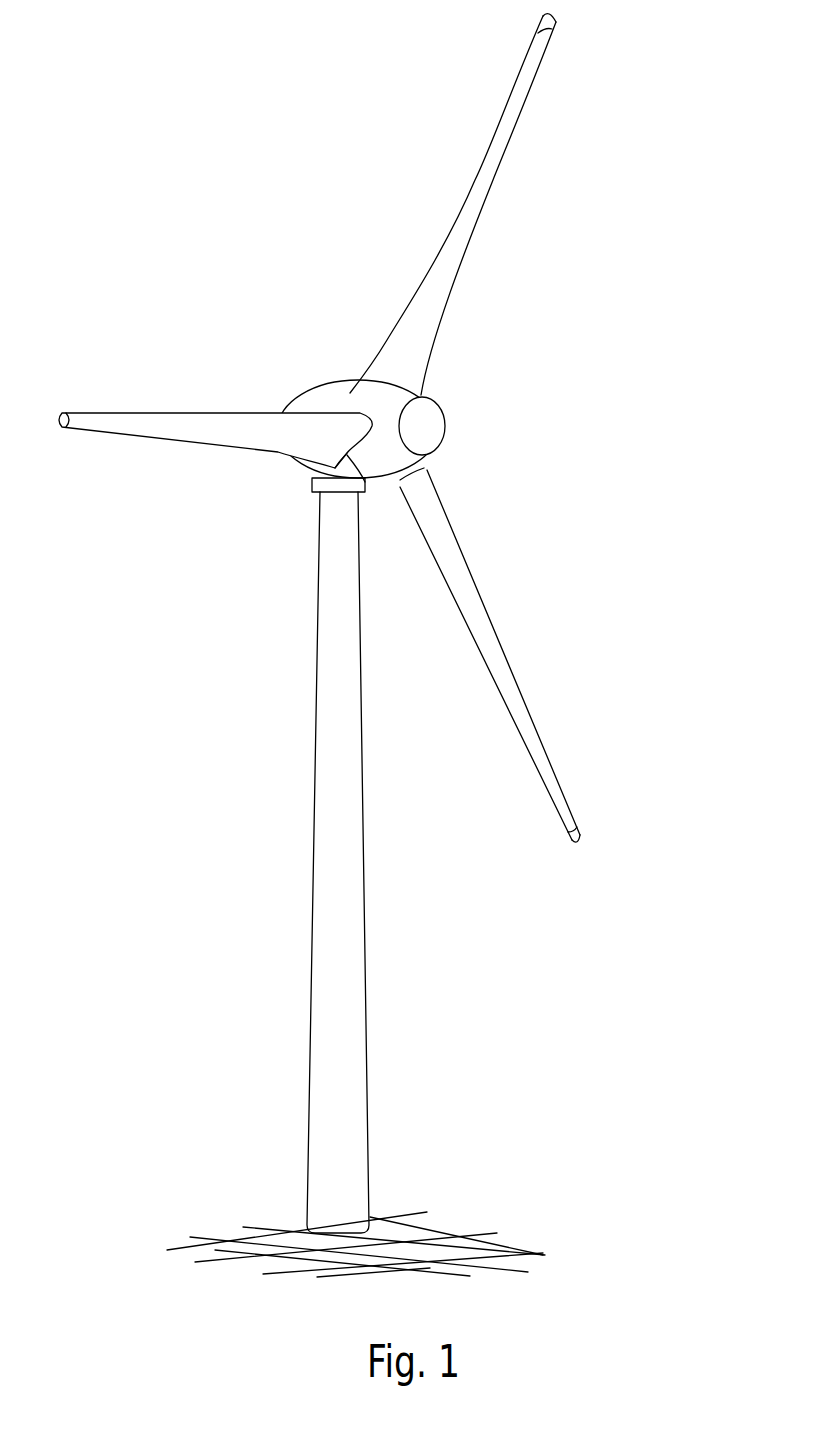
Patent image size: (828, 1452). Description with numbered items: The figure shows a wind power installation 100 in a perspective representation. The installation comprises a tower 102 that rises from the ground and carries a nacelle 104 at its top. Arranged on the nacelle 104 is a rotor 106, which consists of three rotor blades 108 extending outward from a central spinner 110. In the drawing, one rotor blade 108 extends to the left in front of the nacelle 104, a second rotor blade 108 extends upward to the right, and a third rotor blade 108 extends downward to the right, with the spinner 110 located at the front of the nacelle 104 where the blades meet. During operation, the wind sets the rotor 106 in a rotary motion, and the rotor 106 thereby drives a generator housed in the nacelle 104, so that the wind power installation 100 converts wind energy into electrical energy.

The wind power installation 100 is at (268, 568).
The tower 102 is at (345, 975).
The nacelle 104 is at (330, 398).
The rotor 106 is at (522, 343).
The rotor blades 108 is at (495, 155).
The spinner 110 is at (429, 428).